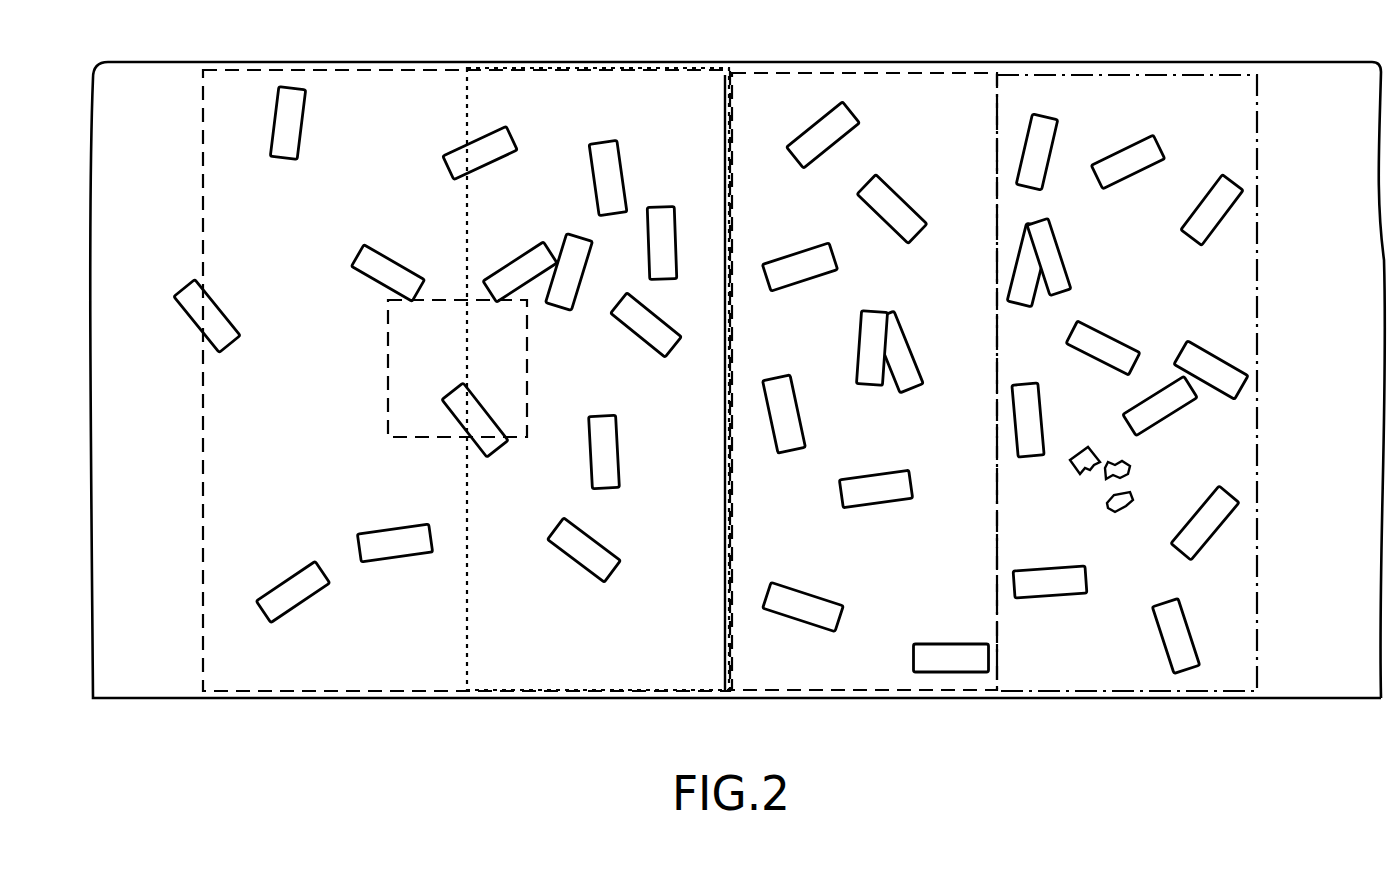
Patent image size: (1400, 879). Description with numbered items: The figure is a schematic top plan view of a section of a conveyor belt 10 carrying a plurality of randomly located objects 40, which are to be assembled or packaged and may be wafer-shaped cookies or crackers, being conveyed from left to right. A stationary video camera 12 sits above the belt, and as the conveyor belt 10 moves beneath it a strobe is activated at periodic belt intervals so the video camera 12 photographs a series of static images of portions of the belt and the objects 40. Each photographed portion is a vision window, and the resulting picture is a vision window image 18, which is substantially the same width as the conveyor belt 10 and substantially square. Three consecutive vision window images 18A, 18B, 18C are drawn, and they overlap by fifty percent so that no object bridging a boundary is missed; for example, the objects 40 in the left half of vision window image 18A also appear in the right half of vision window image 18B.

The conveyor belt 10 is at (122, 83).
The video camera 12 is at (407, 400).
The vision window image 18 is at (467, 695).
The vision window image 18A is at (1045, 103).
The vision window image 18B is at (555, 122).
The vision window image 18C is at (358, 672).
The objects 40 is at (887, 175).